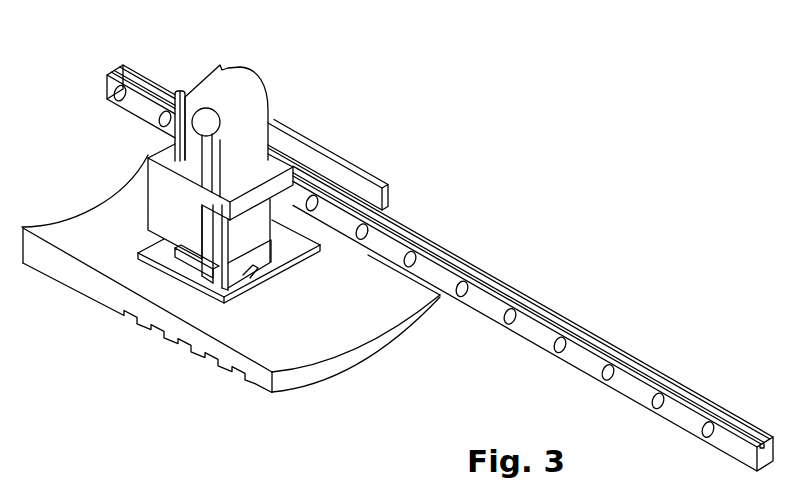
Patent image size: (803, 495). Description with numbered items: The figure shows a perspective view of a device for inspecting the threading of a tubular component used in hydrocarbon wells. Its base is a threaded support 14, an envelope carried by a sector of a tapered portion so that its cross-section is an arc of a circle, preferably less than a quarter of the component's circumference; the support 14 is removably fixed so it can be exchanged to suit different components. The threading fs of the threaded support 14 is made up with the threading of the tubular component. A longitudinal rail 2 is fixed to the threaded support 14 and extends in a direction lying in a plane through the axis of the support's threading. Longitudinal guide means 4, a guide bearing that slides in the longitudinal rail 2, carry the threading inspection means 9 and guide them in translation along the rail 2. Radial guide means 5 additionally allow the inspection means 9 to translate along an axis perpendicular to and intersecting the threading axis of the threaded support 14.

The longitudinal rail 2 is at (404, 231).
The longitudinal guide means 4 is at (283, 135).
The radial guide means 5 is at (158, 190).
The threading inspection means 9 is at (233, 93).
The threaded support 14 is at (231, 313).
The threading of the threaded support fs is at (225, 363).